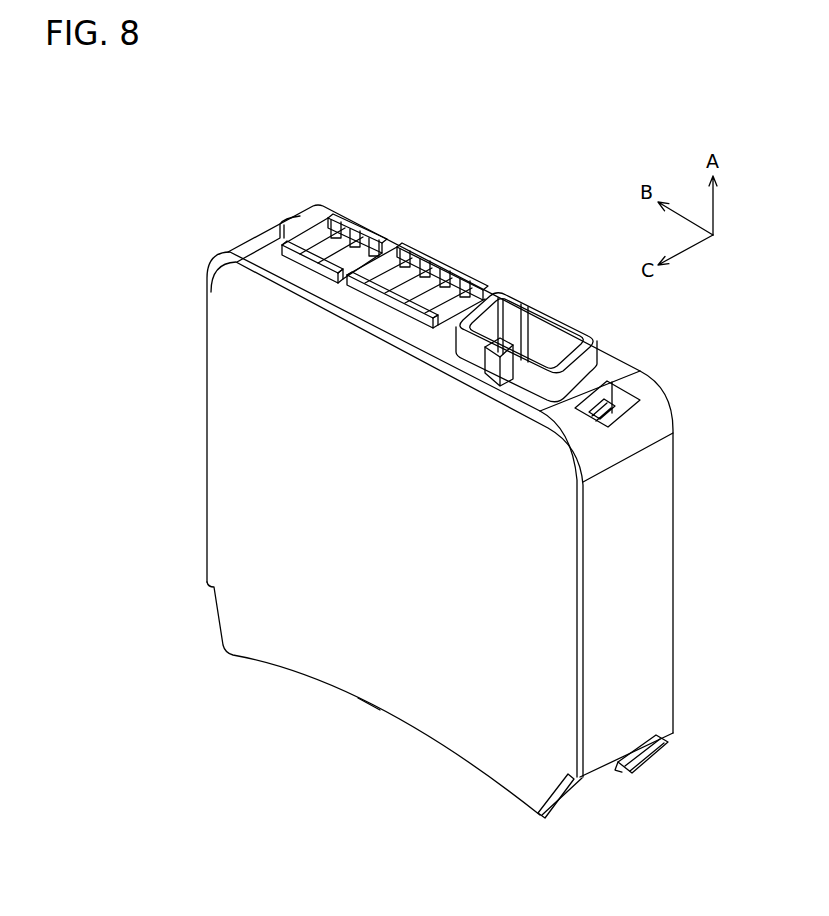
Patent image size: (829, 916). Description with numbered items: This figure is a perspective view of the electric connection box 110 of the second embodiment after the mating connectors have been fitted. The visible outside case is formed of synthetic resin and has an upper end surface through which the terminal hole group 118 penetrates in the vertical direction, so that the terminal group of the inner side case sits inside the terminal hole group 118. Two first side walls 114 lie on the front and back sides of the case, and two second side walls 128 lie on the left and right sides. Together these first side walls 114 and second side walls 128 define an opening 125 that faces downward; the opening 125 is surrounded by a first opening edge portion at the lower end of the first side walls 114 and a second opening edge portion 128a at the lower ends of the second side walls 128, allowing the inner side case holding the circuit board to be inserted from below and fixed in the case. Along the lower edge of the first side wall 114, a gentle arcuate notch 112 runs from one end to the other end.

The electric connection box 110 is at (426, 152).
The gentle arcuate notch 112 is at (333, 687).
The first side wall 114 is at (226, 462).
The terminal hole group 118 is at (365, 226).
The opening 125 is at (291, 695).
The second side wall 128 is at (653, 573).
The second opening edge portion 128a is at (617, 770).